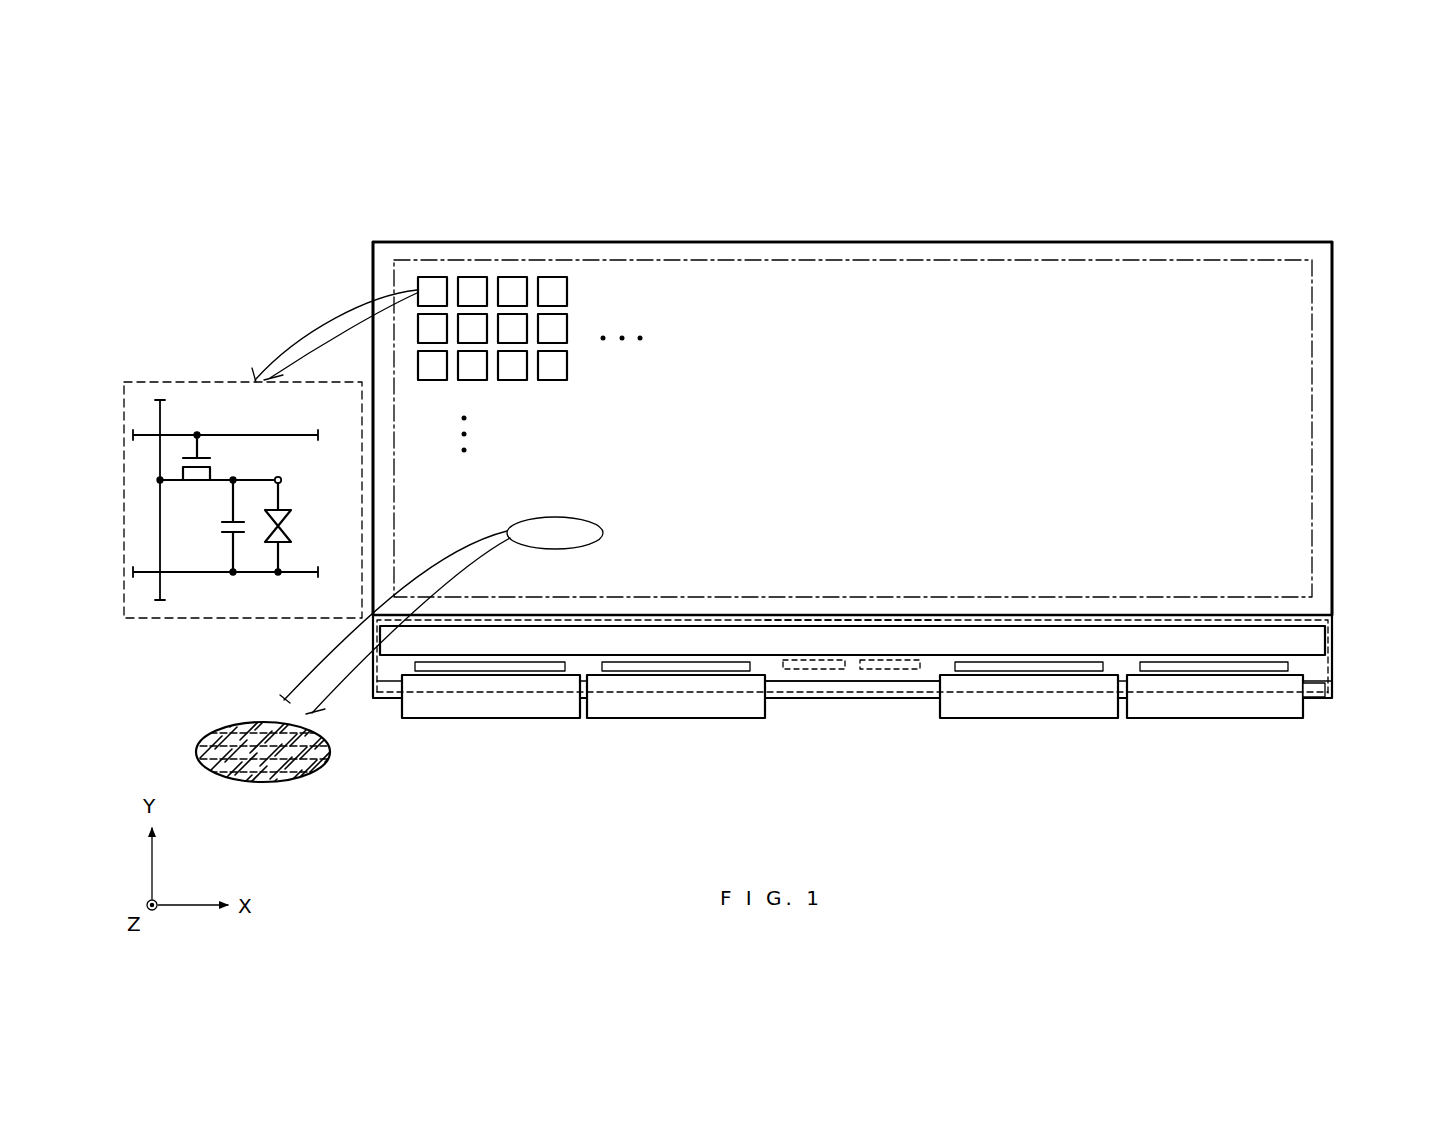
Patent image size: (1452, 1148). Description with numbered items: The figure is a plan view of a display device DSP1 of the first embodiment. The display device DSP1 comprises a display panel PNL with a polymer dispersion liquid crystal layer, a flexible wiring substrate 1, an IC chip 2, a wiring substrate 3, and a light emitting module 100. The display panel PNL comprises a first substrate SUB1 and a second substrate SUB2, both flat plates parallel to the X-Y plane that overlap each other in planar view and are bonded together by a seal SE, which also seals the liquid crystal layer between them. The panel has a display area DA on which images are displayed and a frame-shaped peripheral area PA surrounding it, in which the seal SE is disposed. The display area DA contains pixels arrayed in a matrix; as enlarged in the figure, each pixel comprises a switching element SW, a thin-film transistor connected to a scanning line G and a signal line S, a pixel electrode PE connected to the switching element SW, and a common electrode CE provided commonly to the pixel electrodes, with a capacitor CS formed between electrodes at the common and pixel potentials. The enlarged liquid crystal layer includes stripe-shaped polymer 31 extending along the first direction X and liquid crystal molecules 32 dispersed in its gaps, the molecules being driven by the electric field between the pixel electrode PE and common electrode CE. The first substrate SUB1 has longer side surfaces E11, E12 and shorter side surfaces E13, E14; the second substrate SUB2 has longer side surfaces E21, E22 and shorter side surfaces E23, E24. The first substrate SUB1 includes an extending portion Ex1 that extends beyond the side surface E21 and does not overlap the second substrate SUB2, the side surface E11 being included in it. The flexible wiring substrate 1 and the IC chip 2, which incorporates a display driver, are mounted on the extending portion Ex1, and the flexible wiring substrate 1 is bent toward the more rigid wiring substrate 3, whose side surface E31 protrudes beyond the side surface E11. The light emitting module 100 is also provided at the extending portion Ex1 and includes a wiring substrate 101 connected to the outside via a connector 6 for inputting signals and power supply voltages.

The display device DSP1 is at (1310, 148).
The display panel PNL is at (1300, 241).
The first substrate SUB1 is at (1318, 668).
The second substrate SUB2 is at (1334, 372).
The display area DA is at (1285, 424).
The peripheral area PA is at (1320, 459).
The seal SE is at (1322, 500).
The side surface E11 is at (893, 686).
The side surface E12 is at (852, 199).
The side surface E13 is at (295, 410).
The side surface E14 is at (1388, 428).
The side surface E21 is at (940, 619).
The side surface E22 is at (1066, 240).
The side surface E23 is at (370, 262).
The side surface E24 is at (1337, 325).
The side surface E31 is at (915, 699).
The scanning line G is at (168, 435).
The signal line S is at (160, 512).
The switching element SW is at (217, 467).
The pixel electrode PE is at (283, 480).
The common electrode CE is at (296, 574).
The capacitor CS is at (220, 528).
The flexible wiring substrate 1 is at (467, 712).
The IC chip 2 is at (505, 668).
The wiring substrate 3 is at (1318, 698).
The connector 6 is at (883, 672).
The light emitting module 100 is at (780, 642).
The wiring substrate 101 is at (1330, 703).
The extending portion Ex1 is at (815, 677).
The polymer 31 is at (203, 762).
The liquid crystal molecules 32 is at (259, 768).